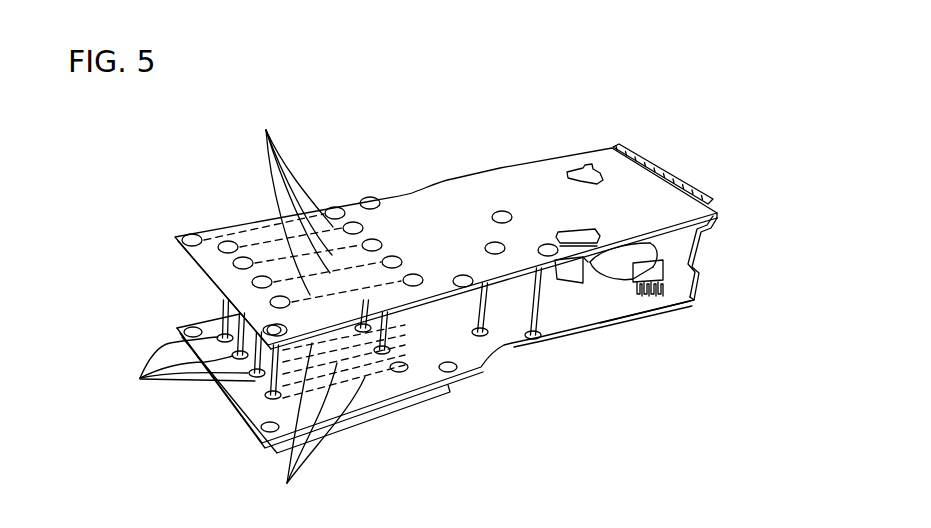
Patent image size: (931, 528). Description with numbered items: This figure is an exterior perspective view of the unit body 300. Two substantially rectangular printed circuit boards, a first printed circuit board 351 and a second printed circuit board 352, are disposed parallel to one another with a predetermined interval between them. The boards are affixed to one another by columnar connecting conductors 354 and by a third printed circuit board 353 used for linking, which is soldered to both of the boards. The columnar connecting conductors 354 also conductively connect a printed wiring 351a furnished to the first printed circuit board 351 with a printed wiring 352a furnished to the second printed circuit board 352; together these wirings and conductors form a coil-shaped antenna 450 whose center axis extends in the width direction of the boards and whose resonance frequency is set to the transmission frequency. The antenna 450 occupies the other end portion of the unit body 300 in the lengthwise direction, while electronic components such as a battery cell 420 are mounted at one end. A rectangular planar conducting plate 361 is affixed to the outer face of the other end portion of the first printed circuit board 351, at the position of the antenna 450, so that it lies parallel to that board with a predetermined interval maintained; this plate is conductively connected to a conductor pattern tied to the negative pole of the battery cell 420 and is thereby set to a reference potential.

The unit body 300 is at (522, 147).
The first printed circuit board 351 is at (458, 355).
The printed wiring 351a is at (314, 427).
The second printed circuit board 352 is at (500, 168).
The printed wiring 352a is at (280, 197).
The third printed circuit board 353 is at (678, 248).
The columnar connecting conductors 354 is at (458, 447).
The planar conducting plate 361 is at (372, 420).
The battery cell 420 is at (617, 263).
The antenna 450 is at (204, 217).